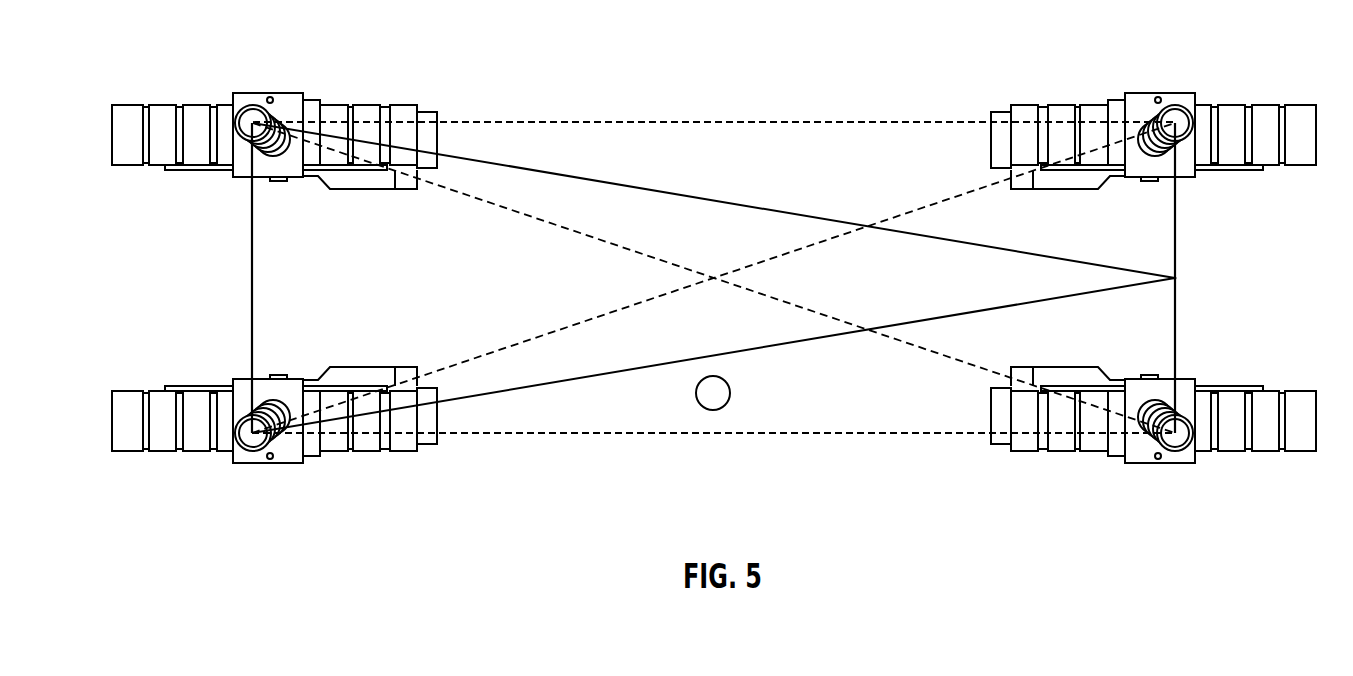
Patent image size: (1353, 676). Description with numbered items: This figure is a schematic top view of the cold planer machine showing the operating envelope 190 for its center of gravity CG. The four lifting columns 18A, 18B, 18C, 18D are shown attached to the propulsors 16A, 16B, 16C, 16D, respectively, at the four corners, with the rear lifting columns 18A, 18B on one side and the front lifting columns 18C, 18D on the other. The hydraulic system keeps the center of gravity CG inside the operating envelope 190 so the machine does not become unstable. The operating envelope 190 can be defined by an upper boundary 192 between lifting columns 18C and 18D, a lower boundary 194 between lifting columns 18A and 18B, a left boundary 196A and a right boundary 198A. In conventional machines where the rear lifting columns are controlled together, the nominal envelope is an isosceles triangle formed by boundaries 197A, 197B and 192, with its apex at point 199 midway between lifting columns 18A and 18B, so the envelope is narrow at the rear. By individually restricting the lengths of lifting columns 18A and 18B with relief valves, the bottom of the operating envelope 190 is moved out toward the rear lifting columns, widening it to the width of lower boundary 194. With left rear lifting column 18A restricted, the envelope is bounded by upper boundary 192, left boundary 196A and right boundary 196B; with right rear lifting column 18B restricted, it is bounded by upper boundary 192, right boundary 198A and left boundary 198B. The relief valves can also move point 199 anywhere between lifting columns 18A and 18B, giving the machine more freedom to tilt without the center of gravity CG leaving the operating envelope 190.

The propulsor 16A is at (1262, 442).
The propulsor 16B is at (1058, 115).
The propulsor 16C is at (125, 442).
The propulsor 16D is at (160, 105).
The left rear lifting column 18A is at (1172, 452).
The right rear lifting column 18B is at (1175, 103).
The lifting column 18C is at (253, 452).
The lifting column 18D is at (252, 103).
The operating envelope 190 is at (757, 97).
The upper boundary 192 is at (250, 278).
The lower boundary 194 is at (1177, 220).
The left boundary 196A is at (845, 435).
The right boundary 196B is at (604, 240).
The boundary 197A is at (557, 173).
The boundary 197B is at (585, 378).
The right boundary 198A is at (470, 118).
The left boundary 198B is at (518, 346).
The point 199 is at (1177, 277).
The center of gravity CG is at (710, 410).